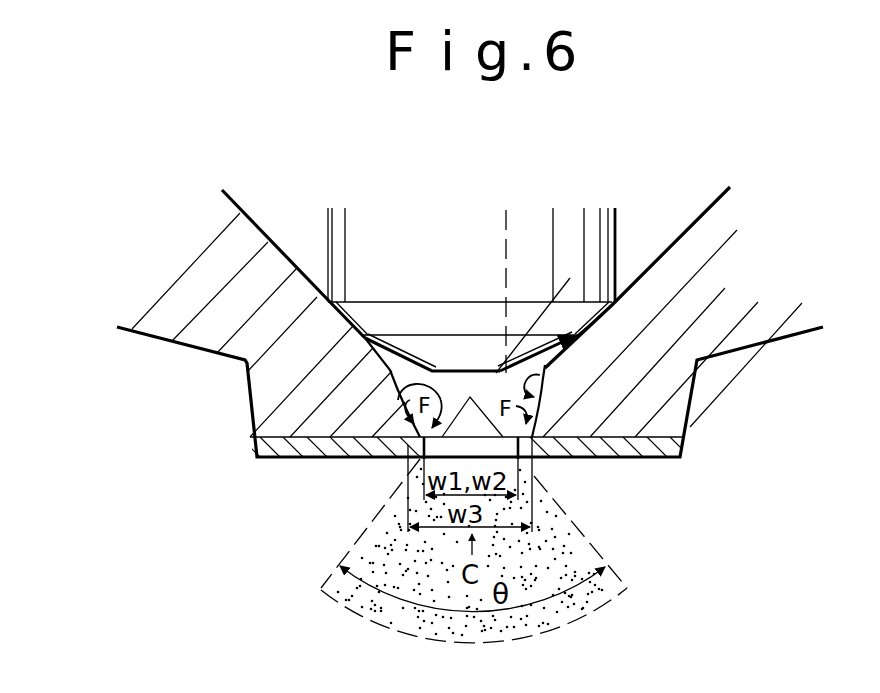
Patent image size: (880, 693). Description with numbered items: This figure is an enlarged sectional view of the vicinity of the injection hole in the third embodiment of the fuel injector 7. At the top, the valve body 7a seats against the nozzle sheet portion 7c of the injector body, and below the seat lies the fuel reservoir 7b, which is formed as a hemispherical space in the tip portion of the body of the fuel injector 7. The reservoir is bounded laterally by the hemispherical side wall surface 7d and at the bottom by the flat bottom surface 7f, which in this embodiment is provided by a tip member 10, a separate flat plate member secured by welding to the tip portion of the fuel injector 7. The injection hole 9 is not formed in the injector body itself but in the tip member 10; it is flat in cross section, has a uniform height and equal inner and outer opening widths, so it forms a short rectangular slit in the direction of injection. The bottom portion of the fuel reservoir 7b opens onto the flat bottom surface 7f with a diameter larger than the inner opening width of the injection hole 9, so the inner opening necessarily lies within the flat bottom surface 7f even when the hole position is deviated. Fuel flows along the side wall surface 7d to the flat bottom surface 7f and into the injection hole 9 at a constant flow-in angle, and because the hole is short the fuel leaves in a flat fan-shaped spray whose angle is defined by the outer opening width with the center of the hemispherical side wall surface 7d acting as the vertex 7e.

The fuel injector 7 is at (725, 291).
The valve body 7a is at (475, 208).
The fuel reservoir 7b is at (500, 373).
The nozzle sheet portion 7c is at (604, 318).
The side wall surface 7d is at (545, 378).
The vertex 7e is at (458, 388).
The flat bottom surface 7f is at (398, 396).
The injection hole 9 is at (516, 454).
The tip member 10 is at (333, 450).